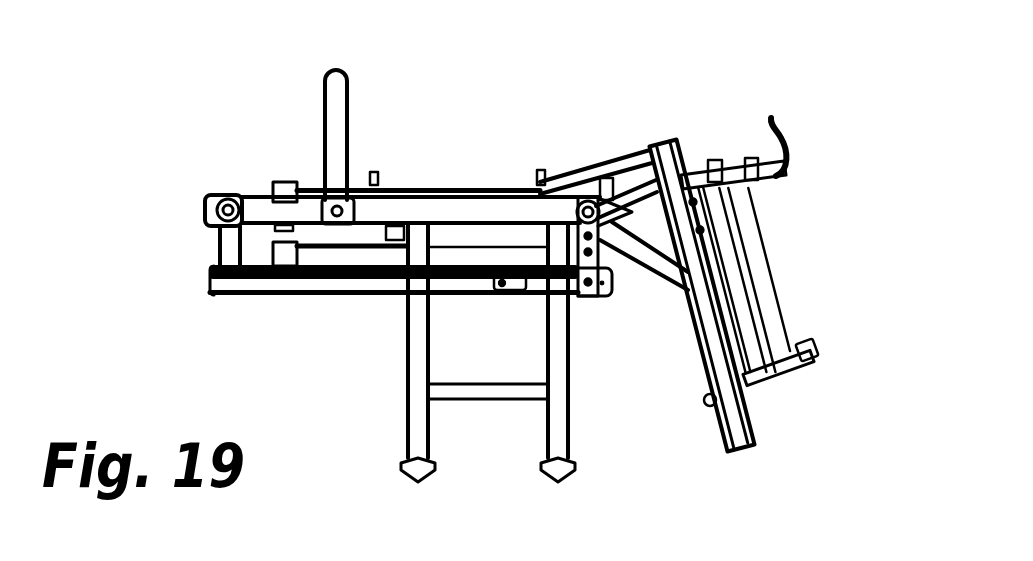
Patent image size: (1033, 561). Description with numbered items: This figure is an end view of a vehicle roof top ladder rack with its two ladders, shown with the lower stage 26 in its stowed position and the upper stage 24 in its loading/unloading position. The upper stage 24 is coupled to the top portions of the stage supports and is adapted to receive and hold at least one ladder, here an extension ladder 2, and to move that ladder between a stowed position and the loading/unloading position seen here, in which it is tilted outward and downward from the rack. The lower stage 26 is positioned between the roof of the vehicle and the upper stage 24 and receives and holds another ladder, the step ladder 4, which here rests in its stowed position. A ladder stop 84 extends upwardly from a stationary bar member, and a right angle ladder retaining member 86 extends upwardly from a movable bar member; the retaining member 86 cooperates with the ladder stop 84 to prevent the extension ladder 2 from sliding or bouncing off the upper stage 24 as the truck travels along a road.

The extension ladder 2 is at (767, 247).
The step ladder 4 is at (383, 252).
The upper stage 24 is at (695, 340).
The lower stage 26 is at (270, 300).
The ladder stop 84 is at (332, 102).
The right angle ladder retaining member 86 is at (783, 131).